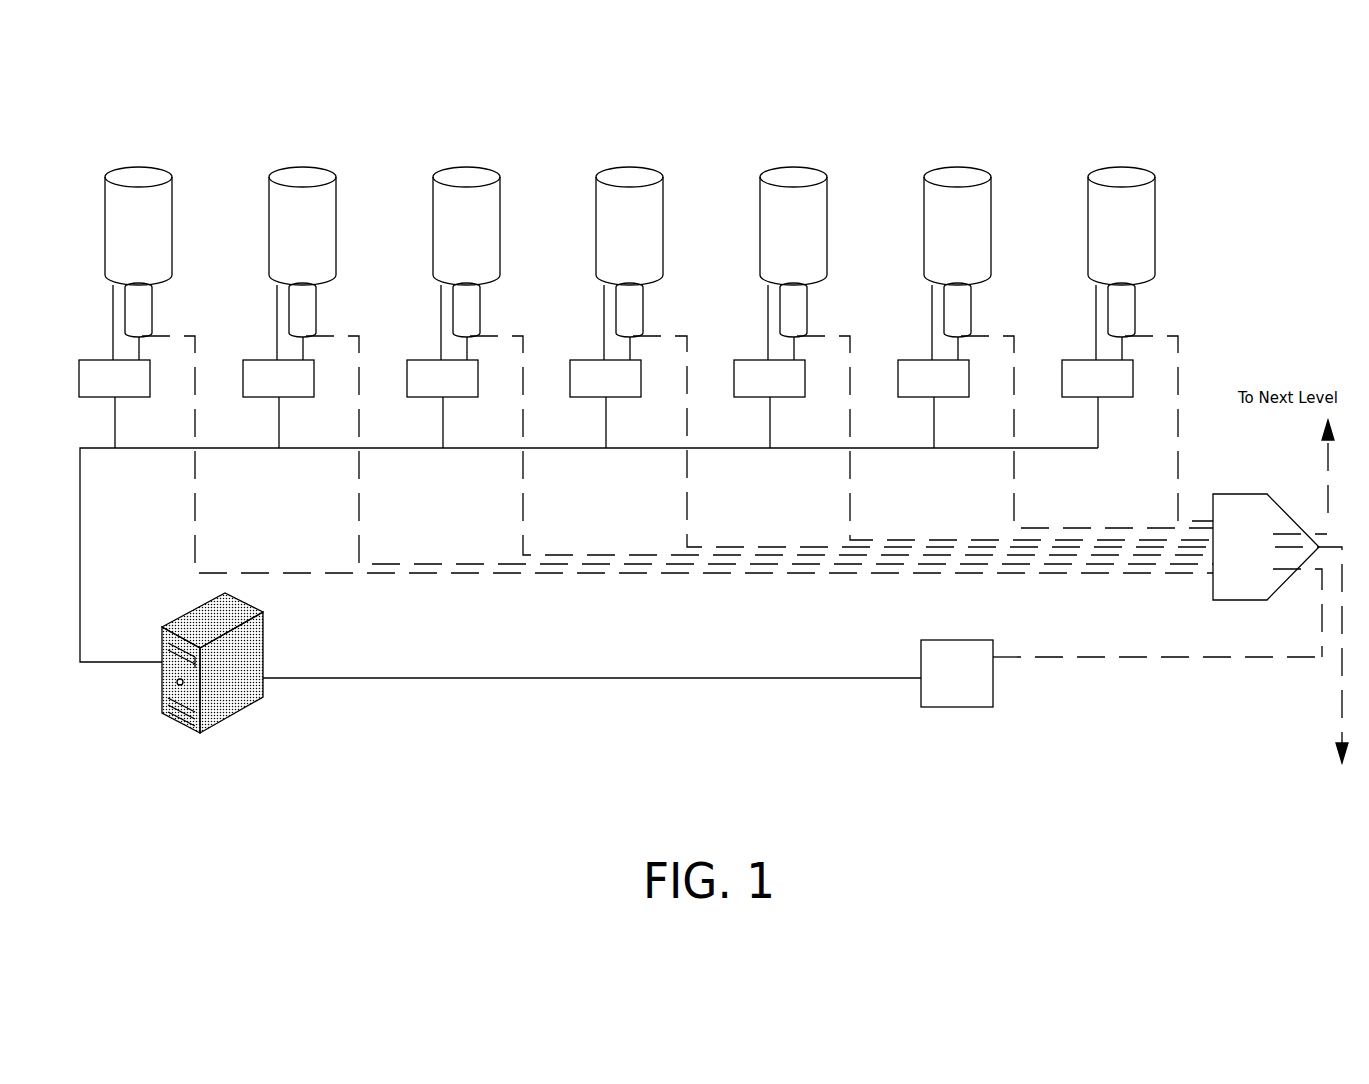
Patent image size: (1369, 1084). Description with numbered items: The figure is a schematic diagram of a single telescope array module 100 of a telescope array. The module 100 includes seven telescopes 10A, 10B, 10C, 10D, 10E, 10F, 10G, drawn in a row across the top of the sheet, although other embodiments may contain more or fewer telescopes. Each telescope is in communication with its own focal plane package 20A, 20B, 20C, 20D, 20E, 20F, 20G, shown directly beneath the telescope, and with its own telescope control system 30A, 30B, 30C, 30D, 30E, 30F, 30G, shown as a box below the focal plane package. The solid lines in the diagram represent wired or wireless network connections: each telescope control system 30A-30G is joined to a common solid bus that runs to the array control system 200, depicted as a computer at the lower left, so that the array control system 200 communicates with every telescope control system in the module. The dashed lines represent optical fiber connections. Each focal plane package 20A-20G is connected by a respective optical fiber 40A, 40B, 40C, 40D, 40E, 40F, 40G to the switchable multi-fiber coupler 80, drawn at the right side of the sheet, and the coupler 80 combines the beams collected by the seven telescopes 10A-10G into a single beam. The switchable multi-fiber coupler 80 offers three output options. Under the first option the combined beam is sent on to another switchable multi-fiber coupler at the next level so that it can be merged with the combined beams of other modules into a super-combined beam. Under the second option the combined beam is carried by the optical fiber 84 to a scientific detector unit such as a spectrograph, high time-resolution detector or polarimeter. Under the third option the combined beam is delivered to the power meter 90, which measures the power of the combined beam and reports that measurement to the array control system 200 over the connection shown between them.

The telescope 10A is at (172, 195).
The telescope 10B is at (336, 195).
The telescope 10C is at (500, 195).
The telescope 10D is at (663, 195).
The telescope 10E is at (827, 195).
The telescope 10F is at (991, 195).
The telescope 10G is at (1155, 195).
The focal plane package 20A is at (152, 310).
The focal plane package 20B is at (316, 310).
The focal plane package 20C is at (480, 310).
The focal plane package 20D is at (643, 310).
The focal plane package 20E is at (807, 310).
The focal plane package 20F is at (971, 310).
The focal plane package 20G is at (1135, 310).
The telescope control system 30A is at (150, 382).
The telescope control system 30B is at (314, 382).
The telescope control system 30C is at (478, 382).
The telescope control system 30D is at (641, 382).
The telescope control system 30E is at (805, 382).
The telescope control system 30F is at (969, 382).
The telescope control system 30G is at (1133, 382).
The optical fiber 40A is at (195, 427).
The optical fiber 40B is at (359, 427).
The optical fiber 40C is at (523, 427).
The optical fiber 40D is at (687, 427).
The optical fiber 40E is at (850, 427).
The optical fiber 40F is at (1014, 427).
The optical fiber 40G is at (1178, 440).
The switchable multi-fiber coupler 80 is at (1240, 600).
The optical fiber 84 is at (1342, 693).
The power meter 90 is at (939, 707).
The telescope array module 100 is at (910, 141).
The array control system 200 is at (233, 715).